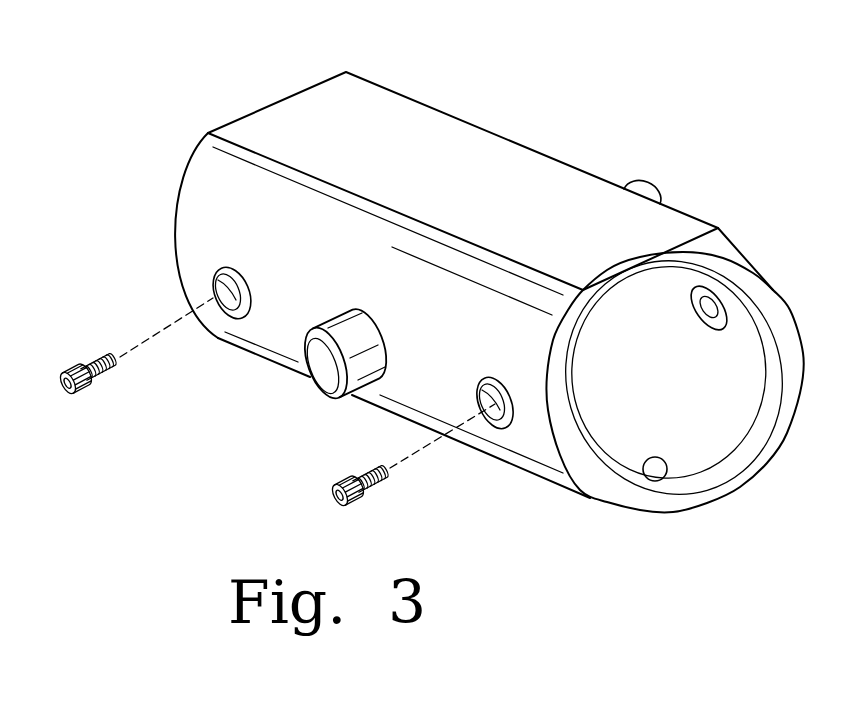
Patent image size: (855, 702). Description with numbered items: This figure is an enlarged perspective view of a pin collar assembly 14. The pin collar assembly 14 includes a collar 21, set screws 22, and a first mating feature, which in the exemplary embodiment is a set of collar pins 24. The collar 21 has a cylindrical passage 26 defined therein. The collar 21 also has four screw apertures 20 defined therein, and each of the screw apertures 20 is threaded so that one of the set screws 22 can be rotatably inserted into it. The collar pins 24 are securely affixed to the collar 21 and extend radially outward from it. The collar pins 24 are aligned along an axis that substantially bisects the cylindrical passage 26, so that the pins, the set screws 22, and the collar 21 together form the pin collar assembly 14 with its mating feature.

The pin collar assembly 14 is at (676, 94).
The collar 21 is at (274, 103).
The screw apertures 20 is at (214, 297).
The set screws 22 is at (66, 402).
The collar pins 24 is at (660, 186).
The cylindrical passage 26 is at (654, 482).